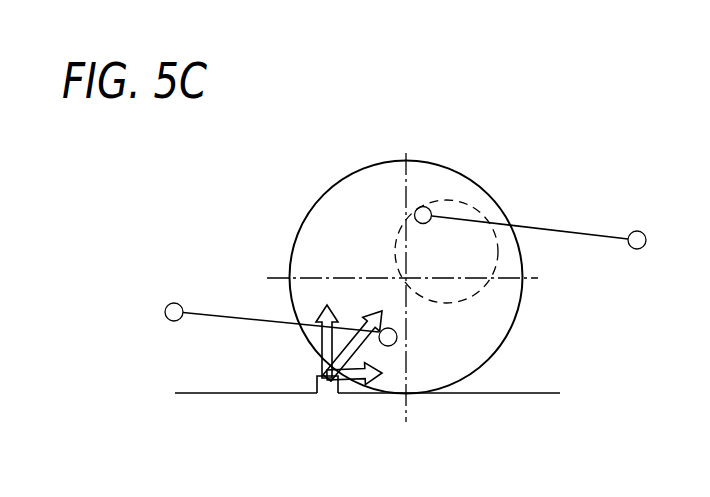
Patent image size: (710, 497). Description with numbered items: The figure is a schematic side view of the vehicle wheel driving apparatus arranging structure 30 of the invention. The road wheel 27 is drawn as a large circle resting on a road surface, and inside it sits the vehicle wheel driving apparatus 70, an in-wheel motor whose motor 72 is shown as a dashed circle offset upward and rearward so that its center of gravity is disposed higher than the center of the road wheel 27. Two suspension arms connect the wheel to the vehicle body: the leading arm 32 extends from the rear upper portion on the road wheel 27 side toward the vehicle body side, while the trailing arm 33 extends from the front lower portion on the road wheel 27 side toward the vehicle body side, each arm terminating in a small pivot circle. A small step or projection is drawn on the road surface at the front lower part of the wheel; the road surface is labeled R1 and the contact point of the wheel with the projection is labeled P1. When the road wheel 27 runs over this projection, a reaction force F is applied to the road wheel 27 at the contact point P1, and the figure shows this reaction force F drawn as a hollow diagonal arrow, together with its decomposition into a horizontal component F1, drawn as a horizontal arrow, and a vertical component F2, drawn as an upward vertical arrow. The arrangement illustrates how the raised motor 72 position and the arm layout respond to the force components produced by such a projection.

The vehicle wheel driving apparatus arranging structure 30 is at (283, 181).
The road wheel 27 is at (446, 158).
The vehicle wheel driving apparatus 70 is at (485, 188).
The motor 72 is at (498, 208).
The leading arm 32 is at (601, 224).
The trailing arm 33 is at (234, 310).
The support surface R1 is at (203, 393).
The contact point P1 is at (317, 382).
The reaction force F is at (357, 331).
The horizontal component F1 is at (366, 374).
The vertical component F2 is at (327, 329).